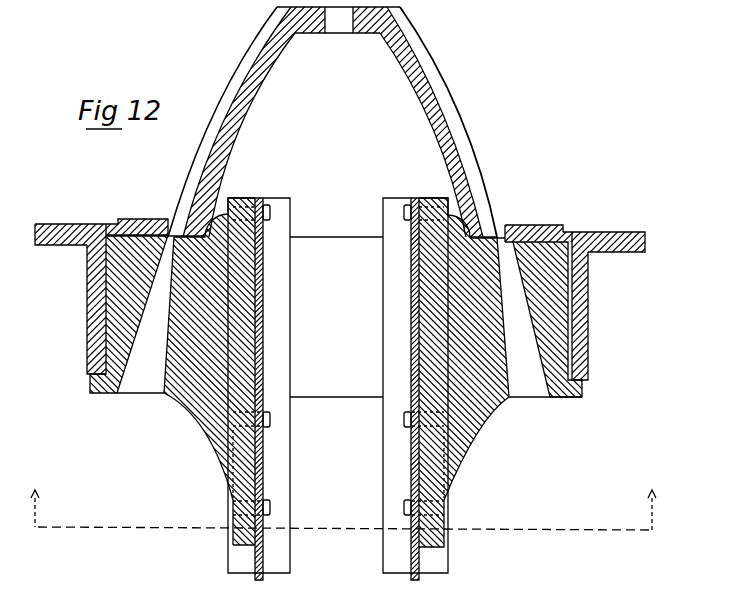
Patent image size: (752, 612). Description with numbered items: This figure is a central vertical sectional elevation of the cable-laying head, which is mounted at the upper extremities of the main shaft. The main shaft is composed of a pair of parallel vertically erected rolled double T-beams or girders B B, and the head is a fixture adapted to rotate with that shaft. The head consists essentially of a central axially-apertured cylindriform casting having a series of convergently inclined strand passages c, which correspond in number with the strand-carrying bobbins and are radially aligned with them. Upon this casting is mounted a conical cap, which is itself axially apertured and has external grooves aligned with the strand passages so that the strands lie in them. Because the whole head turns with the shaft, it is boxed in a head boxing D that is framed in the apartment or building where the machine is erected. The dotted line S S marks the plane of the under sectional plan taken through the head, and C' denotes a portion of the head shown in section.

The beam B is at (338, 389).
The hub / cone base C' is at (360, 372).
The strand passages c is at (349, 366).
The head boxing D is at (86, 319).
The section line S is at (341, 521).